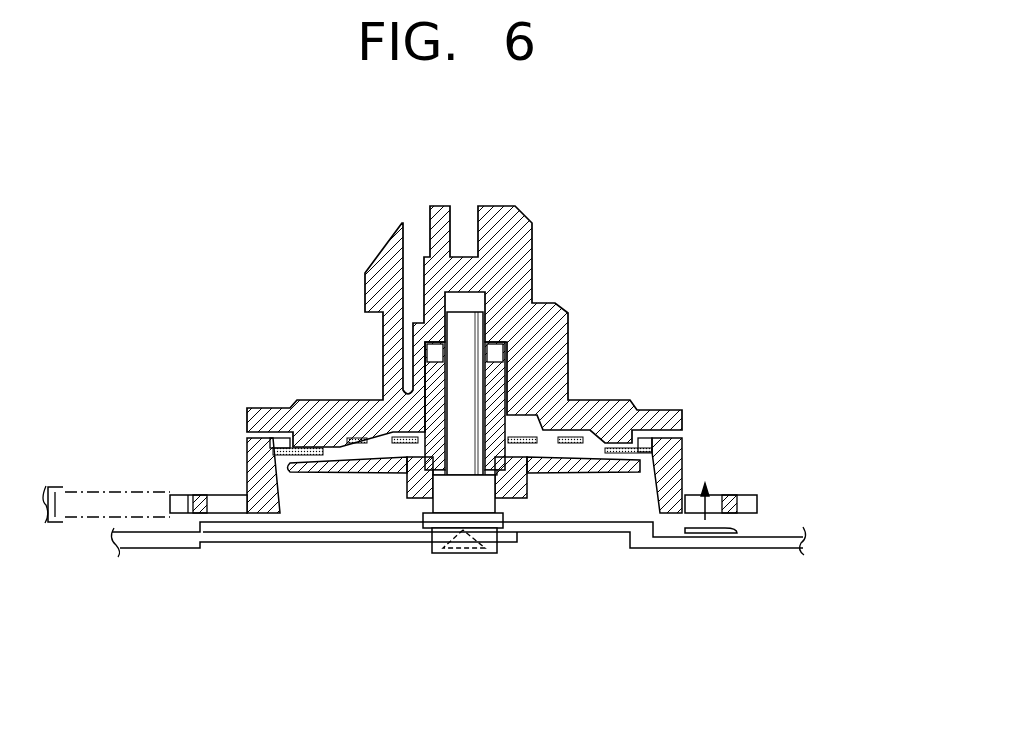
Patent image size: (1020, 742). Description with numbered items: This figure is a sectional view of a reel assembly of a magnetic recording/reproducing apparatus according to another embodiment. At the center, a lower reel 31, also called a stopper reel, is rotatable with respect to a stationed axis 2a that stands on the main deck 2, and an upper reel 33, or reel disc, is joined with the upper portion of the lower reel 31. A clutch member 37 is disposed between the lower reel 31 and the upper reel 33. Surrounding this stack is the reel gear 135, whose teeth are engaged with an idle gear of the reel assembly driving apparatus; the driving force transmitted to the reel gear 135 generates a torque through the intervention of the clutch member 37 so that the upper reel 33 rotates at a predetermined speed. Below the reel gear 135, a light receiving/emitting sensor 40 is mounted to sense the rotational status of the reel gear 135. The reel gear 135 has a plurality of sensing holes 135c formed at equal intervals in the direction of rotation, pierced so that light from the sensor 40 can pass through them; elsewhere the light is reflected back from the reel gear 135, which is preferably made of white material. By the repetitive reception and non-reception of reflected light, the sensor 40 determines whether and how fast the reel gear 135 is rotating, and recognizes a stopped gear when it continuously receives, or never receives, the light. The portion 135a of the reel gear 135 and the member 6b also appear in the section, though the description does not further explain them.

The upper reel 33 is at (571, 301).
The stationed axis 2a is at (457, 327).
The clutch member 37 is at (573, 437).
The connecting member 6b is at (100, 492).
The reel gear 135 is at (690, 457).
The sensing holes 135c is at (718, 500).
The bracket 135a is at (757, 496).
The main deck 2 is at (355, 535).
The lower reel 31 is at (568, 479).
The light receiving/emitting sensor 40 is at (735, 533).